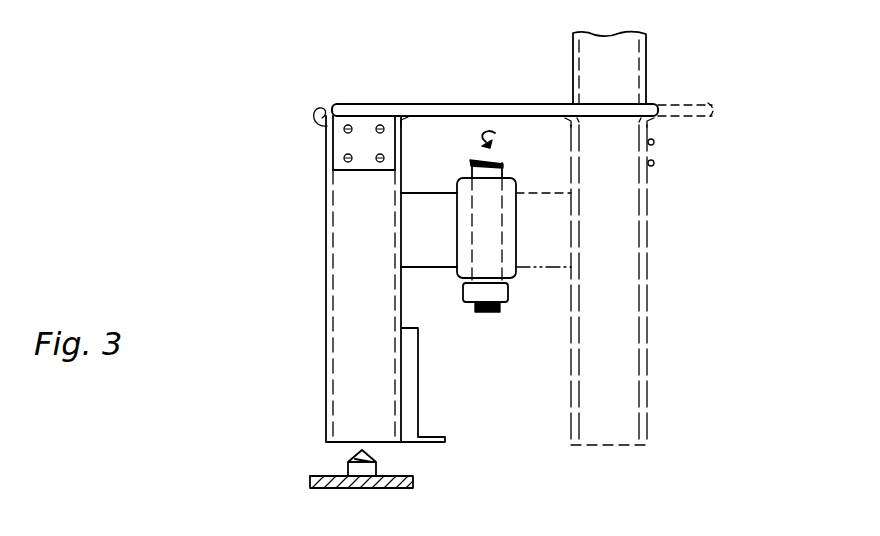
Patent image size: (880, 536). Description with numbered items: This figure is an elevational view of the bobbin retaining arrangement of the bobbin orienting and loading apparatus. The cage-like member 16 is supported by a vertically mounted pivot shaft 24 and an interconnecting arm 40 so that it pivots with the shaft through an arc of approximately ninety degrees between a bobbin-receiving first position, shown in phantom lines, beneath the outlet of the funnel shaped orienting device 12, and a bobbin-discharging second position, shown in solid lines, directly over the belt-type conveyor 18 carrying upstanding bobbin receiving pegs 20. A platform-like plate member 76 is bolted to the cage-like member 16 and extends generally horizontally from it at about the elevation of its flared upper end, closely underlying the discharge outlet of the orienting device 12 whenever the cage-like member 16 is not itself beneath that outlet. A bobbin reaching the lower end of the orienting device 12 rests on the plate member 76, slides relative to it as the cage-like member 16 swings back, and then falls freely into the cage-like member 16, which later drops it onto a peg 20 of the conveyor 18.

The orienting device 12 is at (628, 78).
The cage-like member 16 is at (352, 285).
The belt-type conveyor 18 is at (312, 481).
The bobbin receiving peg 20 is at (366, 455).
The pivot shaft 24 is at (497, 168).
The interconnecting arm 40 is at (447, 253).
The plate member 76 is at (530, 72).